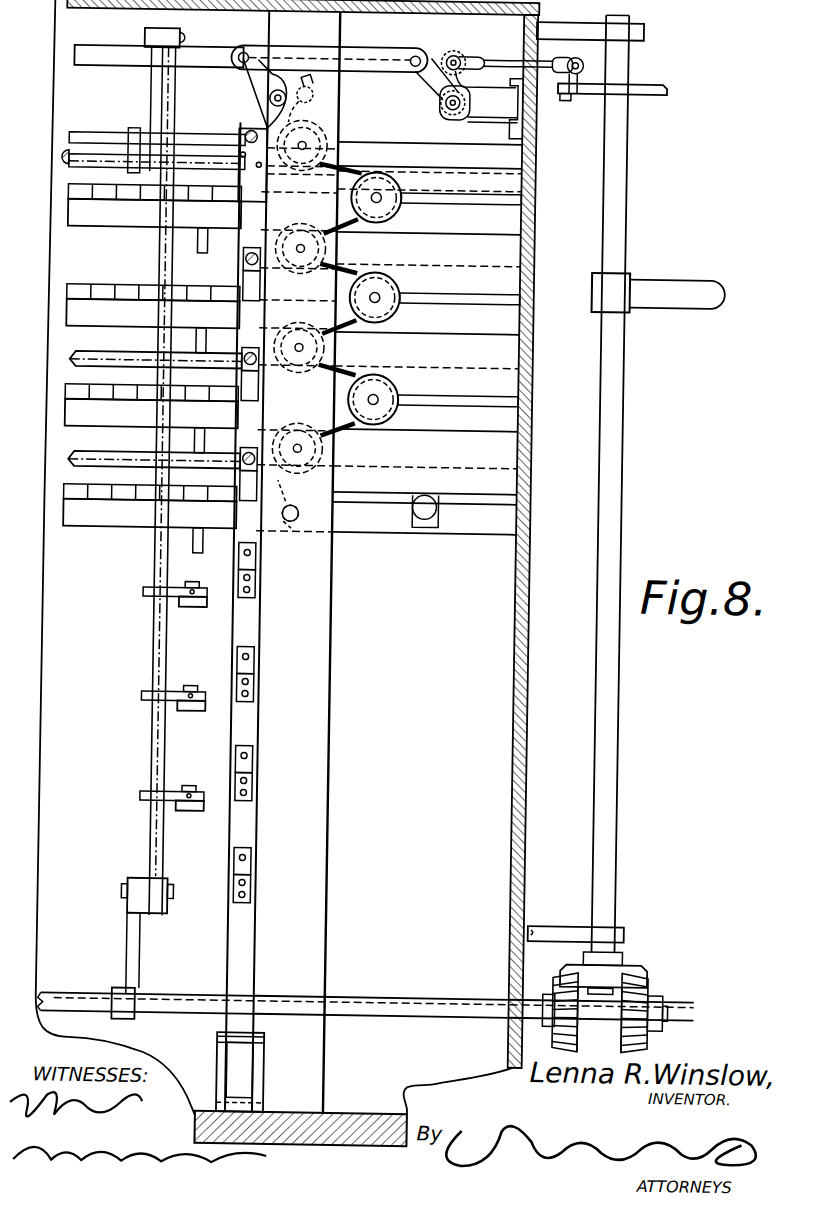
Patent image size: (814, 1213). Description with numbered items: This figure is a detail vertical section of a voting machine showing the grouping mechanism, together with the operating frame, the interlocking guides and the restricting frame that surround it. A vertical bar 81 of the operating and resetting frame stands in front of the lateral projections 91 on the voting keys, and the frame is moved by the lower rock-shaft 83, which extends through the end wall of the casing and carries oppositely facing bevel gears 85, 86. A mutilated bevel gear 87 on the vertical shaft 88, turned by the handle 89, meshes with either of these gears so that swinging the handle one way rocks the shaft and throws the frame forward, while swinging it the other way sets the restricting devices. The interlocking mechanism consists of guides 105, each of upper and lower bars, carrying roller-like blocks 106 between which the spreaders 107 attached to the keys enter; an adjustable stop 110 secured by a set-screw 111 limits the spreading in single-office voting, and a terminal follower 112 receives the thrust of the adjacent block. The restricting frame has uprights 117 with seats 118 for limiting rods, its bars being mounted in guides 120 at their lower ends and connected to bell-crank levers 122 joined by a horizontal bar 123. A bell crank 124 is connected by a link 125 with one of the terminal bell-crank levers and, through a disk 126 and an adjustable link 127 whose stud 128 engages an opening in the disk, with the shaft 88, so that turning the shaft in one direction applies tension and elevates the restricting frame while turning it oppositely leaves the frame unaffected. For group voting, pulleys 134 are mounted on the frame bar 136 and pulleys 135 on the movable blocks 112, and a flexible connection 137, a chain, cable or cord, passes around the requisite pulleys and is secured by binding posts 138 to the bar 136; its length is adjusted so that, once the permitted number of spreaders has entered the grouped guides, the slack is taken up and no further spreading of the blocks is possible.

The vertical bars 81 is at (169, 78).
The rock-shaft 83 is at (393, 996).
The bevel gear 85 is at (652, 980).
The bevel gear 86 is at (518, 977).
The mutilated bevel gear 87 is at (628, 970).
The vertical shaft 88 is at (611, 435).
The handle 89 is at (665, 278).
The projections 91 is at (147, 795).
The guides 105 is at (62, 562).
The blocks 106 is at (149, 502).
The spreaders 107 is at (208, 669).
The adjustable stop 110 is at (419, 497).
The set-screw 111 is at (426, 519).
The follower 112 is at (402, 296).
The uprights 117 is at (250, 616).
The seats 118 is at (252, 680).
The guides 120 is at (272, 1061).
The bell-crank levers 122 is at (262, 100).
The horizontal bar 123 is at (77, 43).
The bell crank 124 is at (452, 80).
The link 125 is at (358, 52).
The disk 126 is at (642, 80).
The link 127 is at (485, 89).
The stud 128 is at (563, 75).
The pulleys 134 is at (316, 126).
The pulleys 135 is at (384, 183).
The bar 136 is at (312, 725).
The flexible connection 137 is at (359, 324).
The binding posts 138 is at (296, 523).